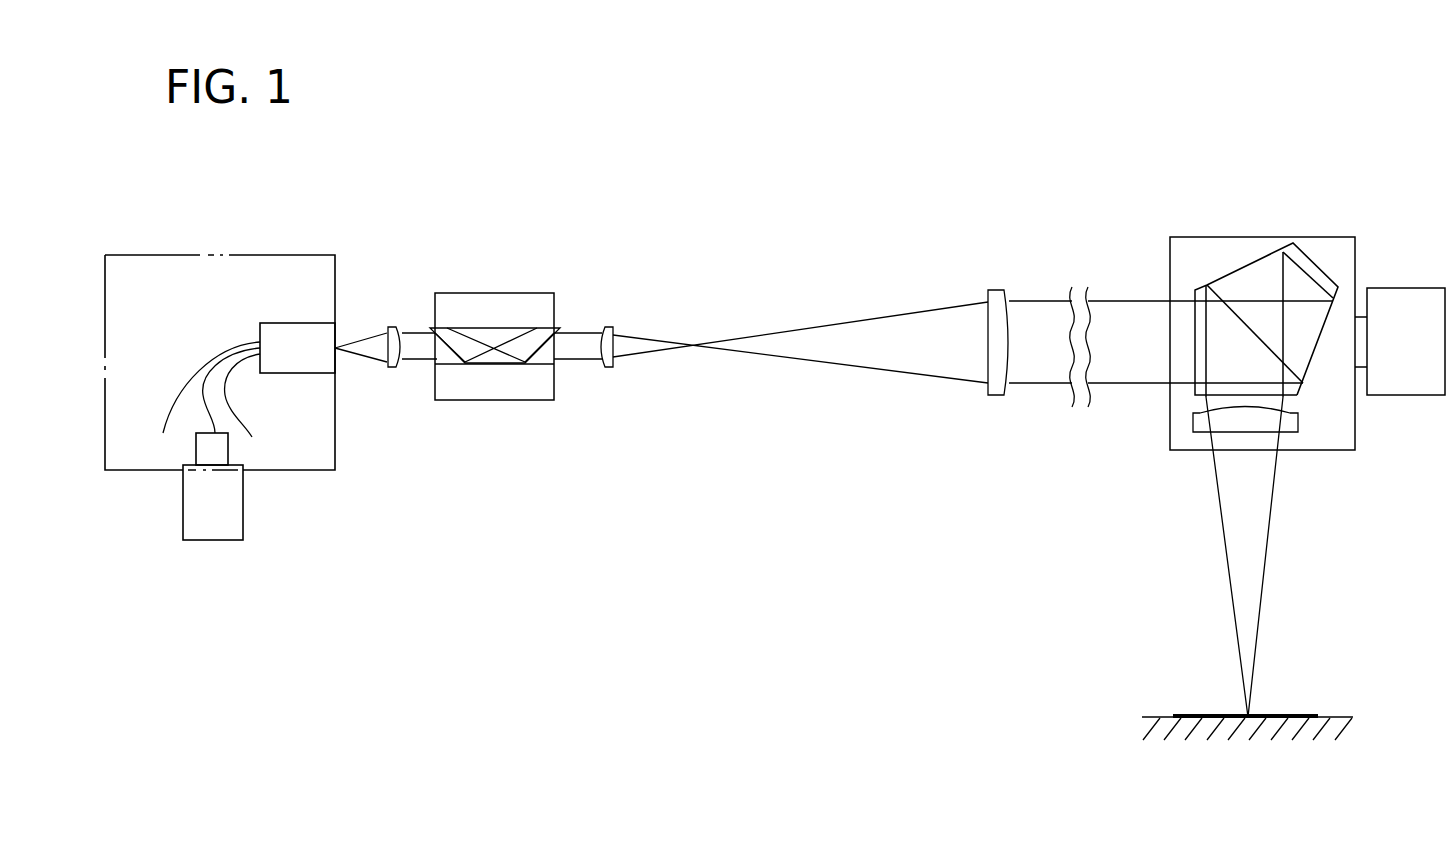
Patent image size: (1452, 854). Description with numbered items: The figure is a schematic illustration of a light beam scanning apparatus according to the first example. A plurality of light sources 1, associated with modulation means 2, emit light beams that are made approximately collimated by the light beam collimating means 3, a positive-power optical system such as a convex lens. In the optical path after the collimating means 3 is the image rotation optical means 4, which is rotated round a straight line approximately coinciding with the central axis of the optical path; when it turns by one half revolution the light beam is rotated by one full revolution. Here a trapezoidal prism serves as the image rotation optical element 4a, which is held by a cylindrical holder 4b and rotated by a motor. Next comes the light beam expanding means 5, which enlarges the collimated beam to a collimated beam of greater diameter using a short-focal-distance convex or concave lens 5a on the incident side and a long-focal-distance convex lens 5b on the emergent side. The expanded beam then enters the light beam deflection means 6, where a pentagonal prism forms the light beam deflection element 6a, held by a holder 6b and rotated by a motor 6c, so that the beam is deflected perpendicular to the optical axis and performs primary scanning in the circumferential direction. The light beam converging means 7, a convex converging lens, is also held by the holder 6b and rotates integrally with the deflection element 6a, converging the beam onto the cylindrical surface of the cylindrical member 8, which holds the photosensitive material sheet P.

The light sources 1 is at (258, 255).
The modulation means 2 is at (243, 506).
The light beam collimating means 3 is at (388, 326).
The image rotation optical means 4 is at (495, 346).
The image rotation optical element 4a is at (490, 364).
The cylindrical holder 4b is at (540, 400).
The light beam expanding means 5 is at (998, 277).
The convex or concave lens 5a is at (608, 368).
The convex lens 5b is at (997, 397).
The light beam deflection means 6 is at (1422, 170).
The light beam deflection element 6a is at (1243, 267).
The holder 6b is at (1317, 237).
The motor 6c is at (1405, 288).
The light beam converging means 7 is at (1220, 426).
The cylindrical member 8 is at (1148, 725).
The photosensitive material sheet P is at (1190, 715).